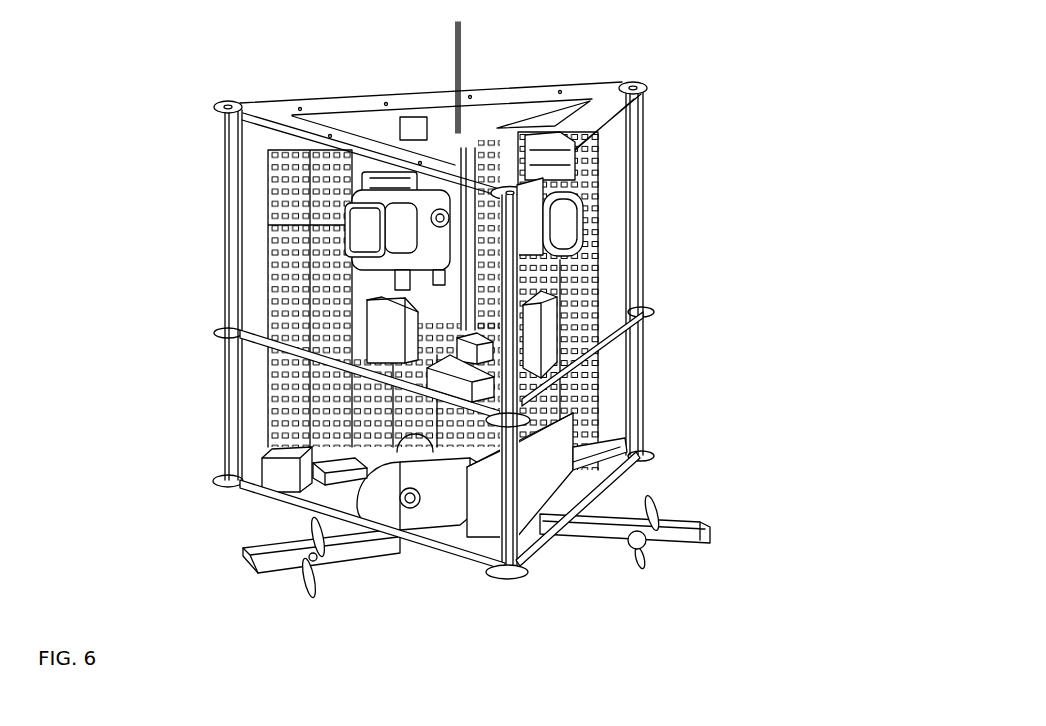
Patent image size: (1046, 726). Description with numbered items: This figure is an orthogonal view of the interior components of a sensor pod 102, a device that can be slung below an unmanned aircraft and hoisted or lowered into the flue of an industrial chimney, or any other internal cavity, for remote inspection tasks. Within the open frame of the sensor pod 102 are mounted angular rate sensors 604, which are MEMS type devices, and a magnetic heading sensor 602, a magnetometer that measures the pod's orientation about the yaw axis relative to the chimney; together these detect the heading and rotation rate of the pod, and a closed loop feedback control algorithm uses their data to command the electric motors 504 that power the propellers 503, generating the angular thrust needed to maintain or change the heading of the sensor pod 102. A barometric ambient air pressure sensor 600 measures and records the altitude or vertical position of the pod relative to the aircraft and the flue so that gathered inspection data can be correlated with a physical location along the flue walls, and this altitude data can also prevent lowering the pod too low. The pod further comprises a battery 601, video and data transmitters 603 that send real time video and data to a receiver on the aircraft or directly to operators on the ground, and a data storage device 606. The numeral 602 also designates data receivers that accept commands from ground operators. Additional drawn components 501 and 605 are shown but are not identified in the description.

The sensor pod 102 is at (665, 124).
The thruster motor 501 is at (368, 228).
The propellers 503 is at (313, 590).
The electric motors 504 is at (645, 543).
The barometric ambient air pressure sensor 600 is at (272, 458).
The battery 601 is at (565, 440).
The magnetic heading sensor 602 is at (497, 387).
The video and data transmitters 603 is at (462, 533).
The angular rate sensors 604 is at (483, 352).
The mounting plate 605 is at (613, 451).
The data storage device 606 is at (375, 325).